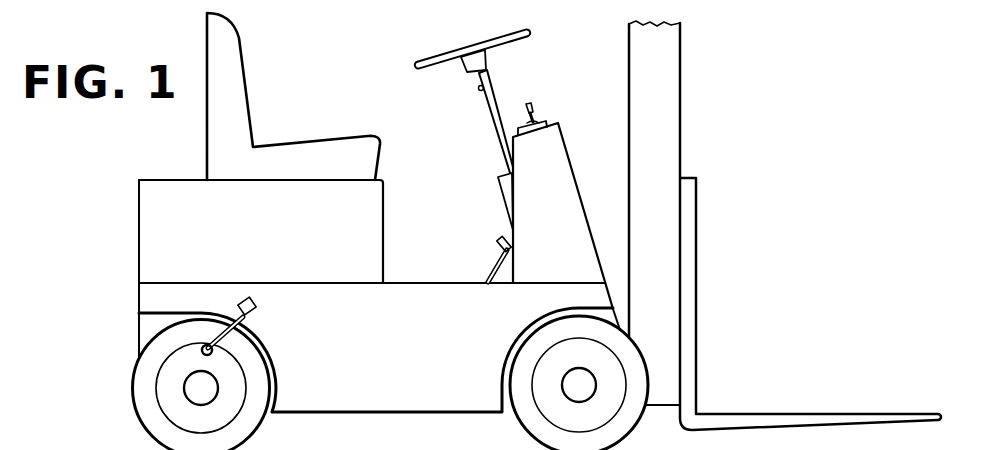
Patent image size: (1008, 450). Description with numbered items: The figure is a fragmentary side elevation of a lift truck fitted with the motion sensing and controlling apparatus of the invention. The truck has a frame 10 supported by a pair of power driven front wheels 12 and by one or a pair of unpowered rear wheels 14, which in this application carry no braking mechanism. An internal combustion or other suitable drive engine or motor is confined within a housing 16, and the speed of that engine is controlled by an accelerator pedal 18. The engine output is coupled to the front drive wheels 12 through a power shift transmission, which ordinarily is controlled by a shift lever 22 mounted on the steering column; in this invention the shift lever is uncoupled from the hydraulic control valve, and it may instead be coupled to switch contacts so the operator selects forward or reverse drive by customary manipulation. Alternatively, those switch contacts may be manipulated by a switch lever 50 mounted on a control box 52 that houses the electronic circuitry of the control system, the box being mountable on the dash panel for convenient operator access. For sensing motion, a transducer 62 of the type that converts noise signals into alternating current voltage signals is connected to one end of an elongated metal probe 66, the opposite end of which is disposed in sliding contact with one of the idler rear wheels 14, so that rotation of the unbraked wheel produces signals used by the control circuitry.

The frame 10 is at (383, 398).
The front wheels 12 is at (528, 422).
The rear wheels 14 is at (246, 426).
The housing 16 is at (162, 190).
The accelerator pedal 18 is at (493, 271).
The shift lever 22 is at (479, 88).
The switch lever 50 is at (530, 109).
The control box 52 is at (548, 122).
The transducer 62 is at (258, 309).
The metal probe 66 is at (200, 347).